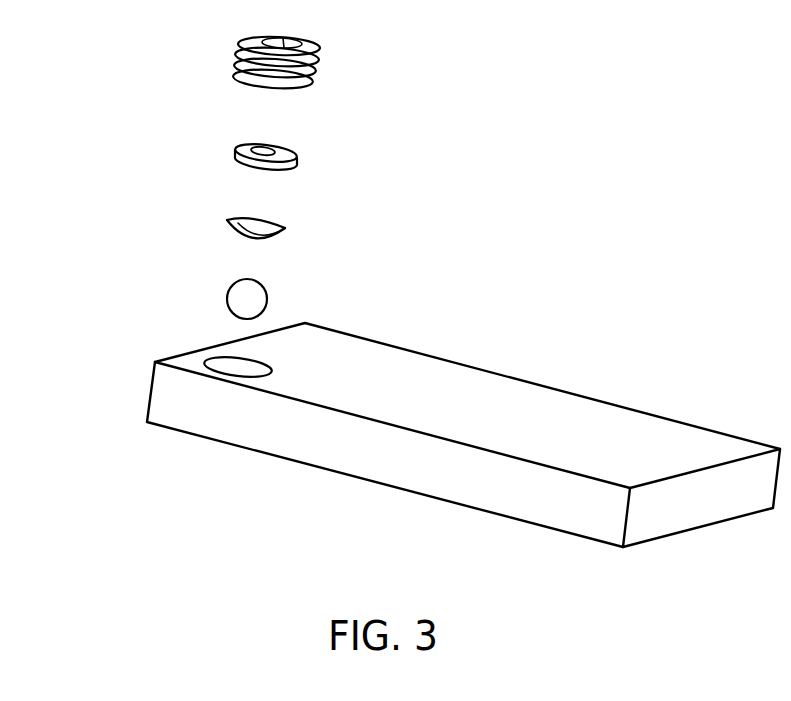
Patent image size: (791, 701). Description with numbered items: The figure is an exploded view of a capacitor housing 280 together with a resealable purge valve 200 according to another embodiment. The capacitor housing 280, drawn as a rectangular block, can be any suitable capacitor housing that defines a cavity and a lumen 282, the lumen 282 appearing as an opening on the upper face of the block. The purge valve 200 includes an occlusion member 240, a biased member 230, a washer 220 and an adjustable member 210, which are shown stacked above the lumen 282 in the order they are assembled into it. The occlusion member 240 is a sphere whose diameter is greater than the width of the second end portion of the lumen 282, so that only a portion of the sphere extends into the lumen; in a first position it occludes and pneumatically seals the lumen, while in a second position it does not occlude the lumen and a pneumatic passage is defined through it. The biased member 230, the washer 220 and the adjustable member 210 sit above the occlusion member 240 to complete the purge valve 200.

The purge valve 200 is at (172, 38).
The adjustable member 210 is at (313, 60).
The washer 220 is at (243, 148).
The biased member 230 is at (283, 229).
The occlusion member 240 is at (241, 294).
The capacitor housing 280 is at (643, 513).
The lumen 282 is at (230, 367).